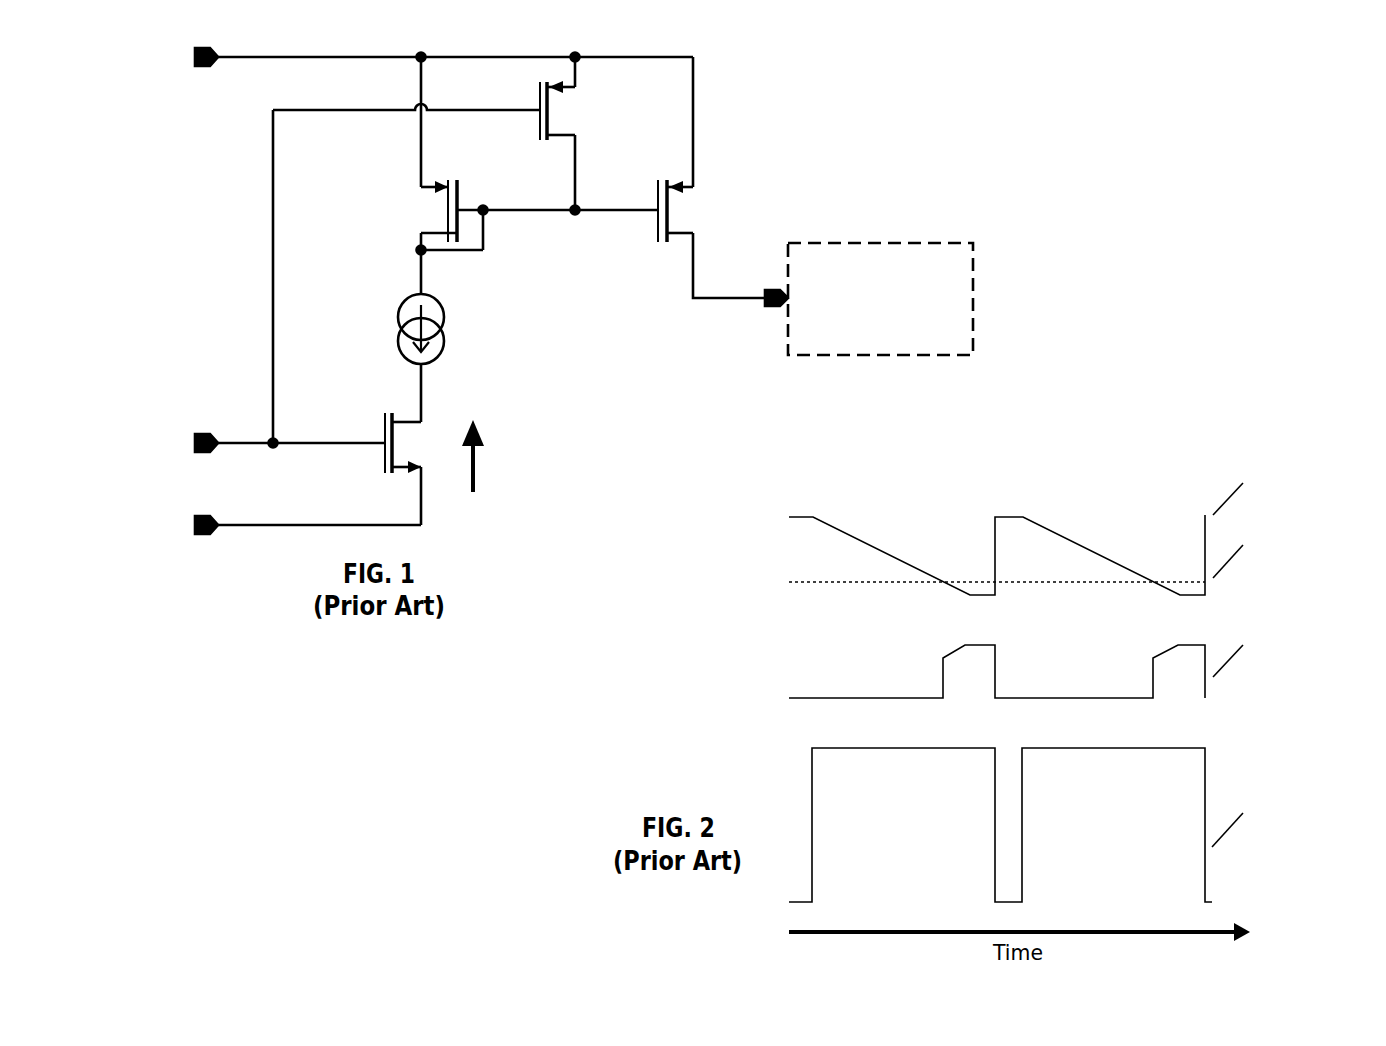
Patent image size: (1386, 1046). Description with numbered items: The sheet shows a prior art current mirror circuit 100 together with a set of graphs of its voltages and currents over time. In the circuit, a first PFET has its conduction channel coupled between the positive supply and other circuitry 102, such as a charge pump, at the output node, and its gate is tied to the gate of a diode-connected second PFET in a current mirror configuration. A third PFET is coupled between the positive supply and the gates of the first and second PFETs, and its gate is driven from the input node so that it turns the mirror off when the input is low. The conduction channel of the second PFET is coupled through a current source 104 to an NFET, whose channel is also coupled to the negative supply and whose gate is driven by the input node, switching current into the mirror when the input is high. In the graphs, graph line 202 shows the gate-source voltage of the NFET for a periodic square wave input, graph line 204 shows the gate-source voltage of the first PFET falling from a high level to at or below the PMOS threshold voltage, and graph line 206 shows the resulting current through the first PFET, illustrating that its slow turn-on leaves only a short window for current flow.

In FIG. 1, the current mirror circuit 100 is at (843, 62).
In FIG. 1, the other circuitry 102 is at (973, 263).
In FIG. 1, the current source 104 is at (450, 340).
In FIG. 2, the graph line 202 is at (878, 758).
In FIG. 2, the graph line 204 is at (852, 530).
In FIG. 2, the graph line 206 is at (852, 685).